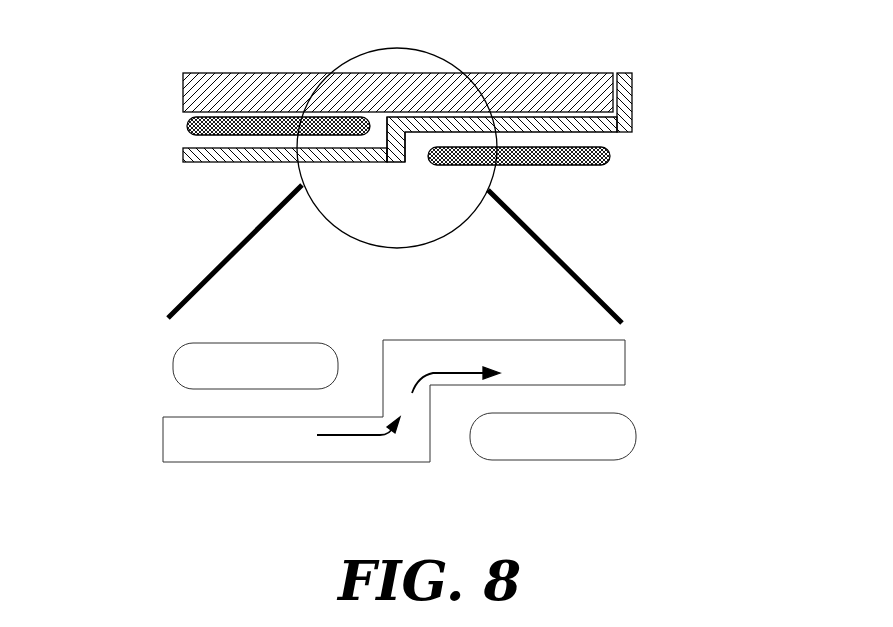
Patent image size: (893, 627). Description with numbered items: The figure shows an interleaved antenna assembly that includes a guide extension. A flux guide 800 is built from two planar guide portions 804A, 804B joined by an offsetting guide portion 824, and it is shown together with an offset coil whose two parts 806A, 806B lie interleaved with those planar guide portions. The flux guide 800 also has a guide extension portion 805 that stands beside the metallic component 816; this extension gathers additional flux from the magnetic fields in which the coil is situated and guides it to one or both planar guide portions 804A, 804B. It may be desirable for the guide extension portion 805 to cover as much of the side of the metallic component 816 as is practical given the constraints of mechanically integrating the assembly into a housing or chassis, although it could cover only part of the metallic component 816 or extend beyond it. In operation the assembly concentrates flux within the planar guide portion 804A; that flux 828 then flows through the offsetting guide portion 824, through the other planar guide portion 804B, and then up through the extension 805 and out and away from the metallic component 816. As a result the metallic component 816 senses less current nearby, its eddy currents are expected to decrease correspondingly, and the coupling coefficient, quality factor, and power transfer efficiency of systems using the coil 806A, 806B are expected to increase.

The flux guide 800 is at (232, 212).
The metallic component 816 is at (298, 73).
The guide extension portion 805 is at (632, 73).
The planar guide portion 804A is at (233, 163).
The planar guide portion 804B is at (617, 133).
The coil 806A is at (193, 134).
The coil 806B is at (558, 166).
The offsetting guide portion 824 is at (405, 165).
The flux 828 is at (472, 373).